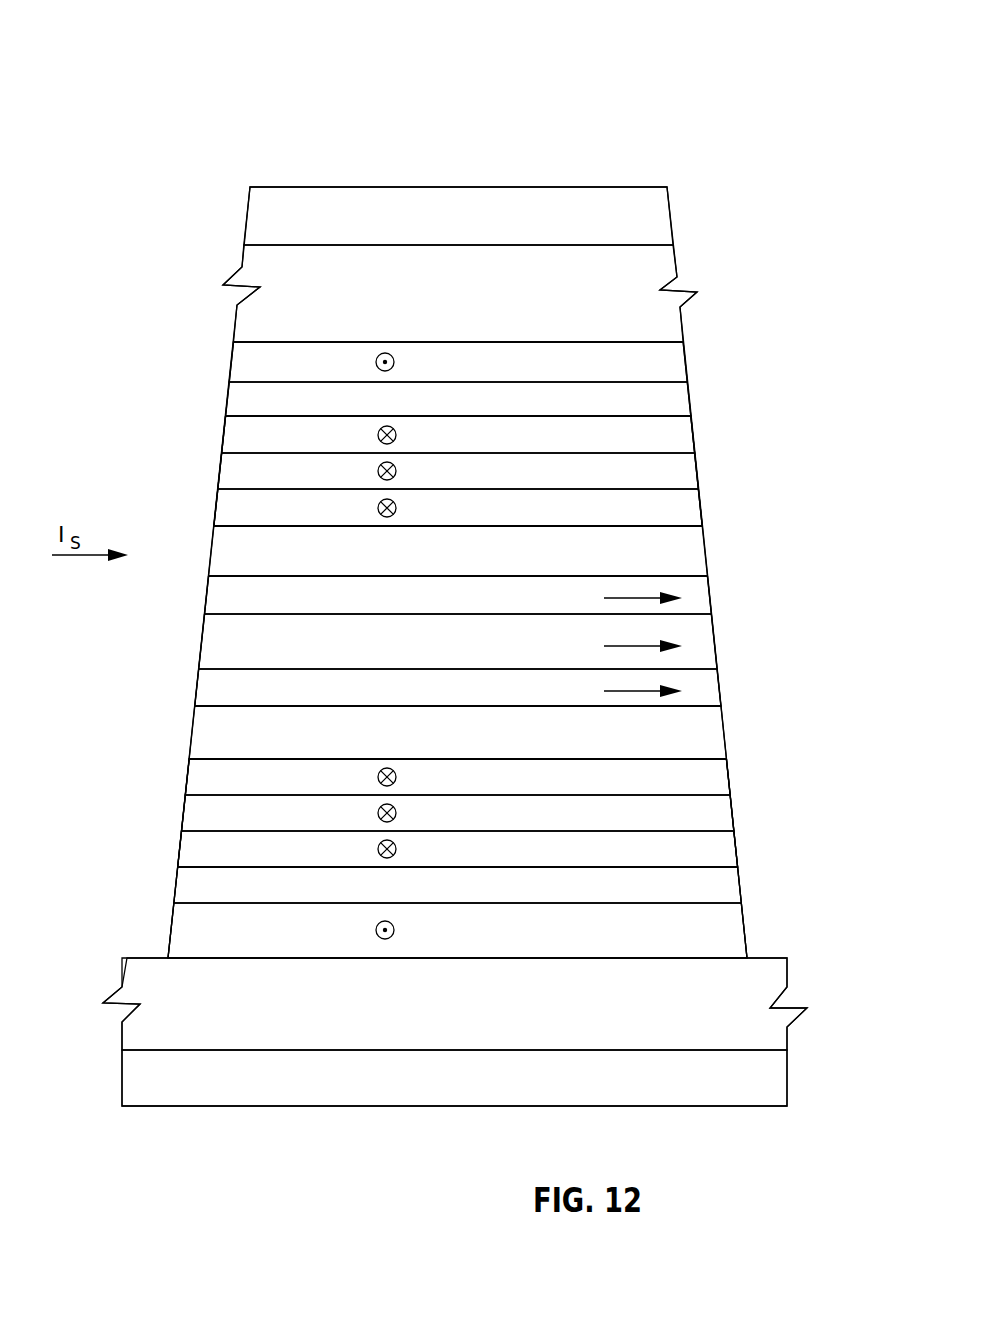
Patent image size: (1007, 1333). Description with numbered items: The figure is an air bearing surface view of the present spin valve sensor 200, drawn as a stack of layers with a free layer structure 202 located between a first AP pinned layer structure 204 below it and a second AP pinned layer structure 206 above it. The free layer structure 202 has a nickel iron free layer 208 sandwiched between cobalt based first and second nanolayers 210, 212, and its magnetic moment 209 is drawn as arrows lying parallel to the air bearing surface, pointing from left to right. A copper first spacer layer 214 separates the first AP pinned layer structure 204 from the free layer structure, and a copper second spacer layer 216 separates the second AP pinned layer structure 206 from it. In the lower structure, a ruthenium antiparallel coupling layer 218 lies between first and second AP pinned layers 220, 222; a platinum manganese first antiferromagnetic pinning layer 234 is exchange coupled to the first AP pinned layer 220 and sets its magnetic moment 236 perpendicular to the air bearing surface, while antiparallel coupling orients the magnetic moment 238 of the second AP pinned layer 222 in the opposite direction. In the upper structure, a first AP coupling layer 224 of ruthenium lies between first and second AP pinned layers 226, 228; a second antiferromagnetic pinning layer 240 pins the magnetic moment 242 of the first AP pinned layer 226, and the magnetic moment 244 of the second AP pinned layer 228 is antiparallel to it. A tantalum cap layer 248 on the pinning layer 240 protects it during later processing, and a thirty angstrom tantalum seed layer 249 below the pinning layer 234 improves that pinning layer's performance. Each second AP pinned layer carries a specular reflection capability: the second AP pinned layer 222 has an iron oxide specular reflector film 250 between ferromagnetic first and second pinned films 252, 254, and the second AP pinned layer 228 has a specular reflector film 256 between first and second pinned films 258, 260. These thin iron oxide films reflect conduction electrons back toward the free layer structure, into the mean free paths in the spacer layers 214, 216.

The spin valve sensor 200 is at (585, 147).
The free layer structure 202 is at (22, 703).
The first AP pinned layer structure 204 is at (176, 755).
The second AP pinned layer structure 206 is at (99, 523).
The free layer 208 is at (712, 637).
The magnetic moment 209 is at (637, 690).
The first nanolayer 210 is at (717, 689).
The second nanolayer 212 is at (707, 596).
The first spacer layer 214 is at (722, 729).
The second spacer layer 216 is at (703, 546).
The antiparallel coupling layer 218 is at (738, 886).
The first AP pinned layer 220 is at (744, 935).
The second AP pinned layer 222 is at (163, 863).
The first AP coupling layer 224 is at (689, 400).
The first AP pinned layer 226 is at (685, 364).
The second AP pinned layer 228 is at (163, 523).
The first antiferromagnetic pinning layer 234 is at (787, 982).
The magnetic moment 236 is at (384, 920).
The magnetic moment 238 is at (377, 777).
The second antiferromagnetic pinning layer 240 is at (680, 320).
The magnetic moment 242 is at (384, 352).
The magnetic moment 244 is at (377, 435).
The cap layer 248 is at (669, 215).
The seed layer 249 is at (787, 1083).
The specular reflector film 250 is at (732, 812).
The first pinned film 252 is at (735, 852).
The second pinned film 254 is at (728, 778).
The specular reflector film 256 is at (695, 472).
The first pinned film 258 is at (692, 437).
The second pinned film 260 is at (699, 510).